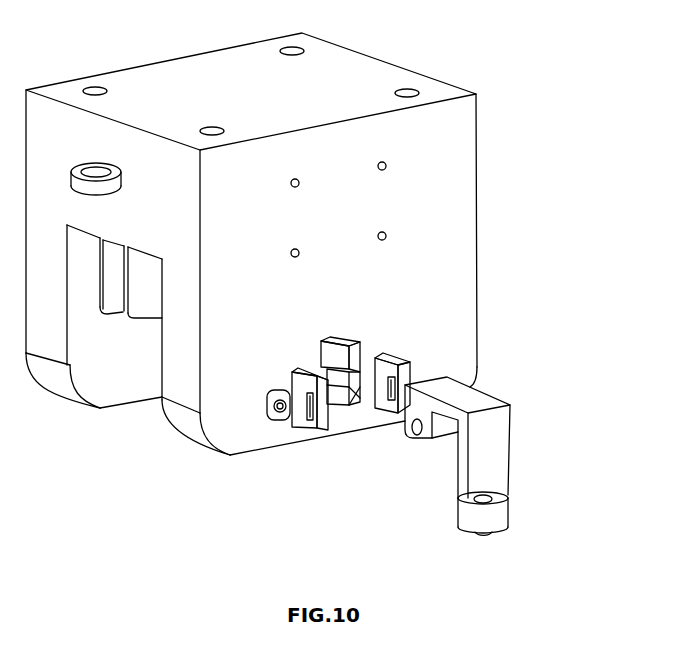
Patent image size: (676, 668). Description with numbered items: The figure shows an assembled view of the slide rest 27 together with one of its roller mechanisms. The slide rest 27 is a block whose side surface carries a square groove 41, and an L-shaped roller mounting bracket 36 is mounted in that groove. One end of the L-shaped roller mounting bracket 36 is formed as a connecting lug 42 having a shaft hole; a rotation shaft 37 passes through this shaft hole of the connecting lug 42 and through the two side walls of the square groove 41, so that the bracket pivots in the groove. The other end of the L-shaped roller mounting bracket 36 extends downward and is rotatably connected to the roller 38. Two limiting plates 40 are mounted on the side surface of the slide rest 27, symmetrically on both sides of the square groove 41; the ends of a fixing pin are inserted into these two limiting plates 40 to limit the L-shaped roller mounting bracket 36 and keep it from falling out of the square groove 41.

The slide rest 27 is at (425, 163).
The L-shaped roller mounting bracket 36 is at (492, 405).
The rotation shaft 37 is at (345, 368).
The roller 38 is at (492, 519).
The limiting plates 40 is at (413, 374).
The square groove 41 is at (336, 345).
The connecting lug 42 is at (426, 447).